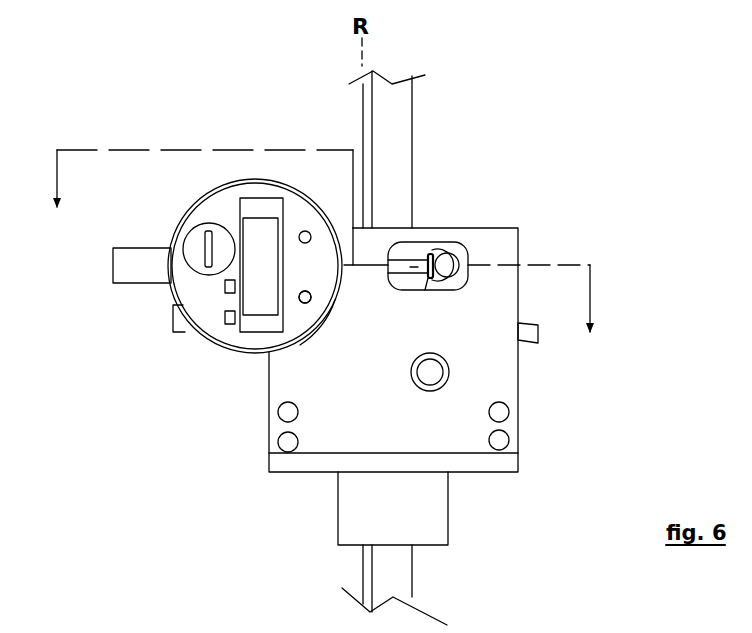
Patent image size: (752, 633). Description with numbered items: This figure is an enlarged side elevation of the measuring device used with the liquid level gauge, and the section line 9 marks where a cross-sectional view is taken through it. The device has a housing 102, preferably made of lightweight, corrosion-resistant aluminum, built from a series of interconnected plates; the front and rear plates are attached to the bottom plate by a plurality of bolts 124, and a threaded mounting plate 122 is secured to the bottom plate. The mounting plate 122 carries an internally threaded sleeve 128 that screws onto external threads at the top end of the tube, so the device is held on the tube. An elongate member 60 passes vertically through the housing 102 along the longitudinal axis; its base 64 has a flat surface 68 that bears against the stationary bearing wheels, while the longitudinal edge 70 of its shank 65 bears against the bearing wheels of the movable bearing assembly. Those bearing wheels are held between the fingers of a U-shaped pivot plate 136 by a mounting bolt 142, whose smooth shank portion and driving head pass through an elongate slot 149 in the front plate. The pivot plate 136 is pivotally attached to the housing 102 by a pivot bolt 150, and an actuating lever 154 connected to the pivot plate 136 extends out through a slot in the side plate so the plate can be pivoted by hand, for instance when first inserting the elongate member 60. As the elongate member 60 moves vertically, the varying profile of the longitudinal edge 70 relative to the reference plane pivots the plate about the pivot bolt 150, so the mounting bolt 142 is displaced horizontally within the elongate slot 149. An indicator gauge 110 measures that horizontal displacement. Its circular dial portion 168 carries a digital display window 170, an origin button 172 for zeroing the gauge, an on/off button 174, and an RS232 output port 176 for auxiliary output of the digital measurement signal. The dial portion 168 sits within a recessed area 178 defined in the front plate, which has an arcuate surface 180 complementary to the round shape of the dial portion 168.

The section line 9- 9 is at (324, 249).
The elongate member 60 is at (408, 585).
The base 64 is at (368, 107).
The shank 65 is at (388, 142).
The flat surface 68 is at (361, 560).
The longitudinal edge 70 is at (413, 113).
The housing 102 is at (497, 228).
The indicator gauge 110 is at (199, 341).
The threaded mounting plate 122 is at (471, 465).
The bolts 124 is at (290, 443).
The internally threaded sleeve 128 is at (353, 510).
The U-shaped pivot plate 136 is at (432, 254).
The mounting bolt 142 is at (461, 258).
The elongate slot 149 is at (448, 242).
The pivot bolt 150 is at (421, 382).
The actuating lever 154 is at (528, 335).
The dial portion 168 is at (187, 213).
The digital display window 170 is at (262, 228).
The origin button 172 is at (301, 302).
The on/off button 174 is at (303, 230).
The RS232 output port 176 is at (173, 325).
The recessed area 178 is at (308, 340).
The arcuate surface 180 is at (314, 293).